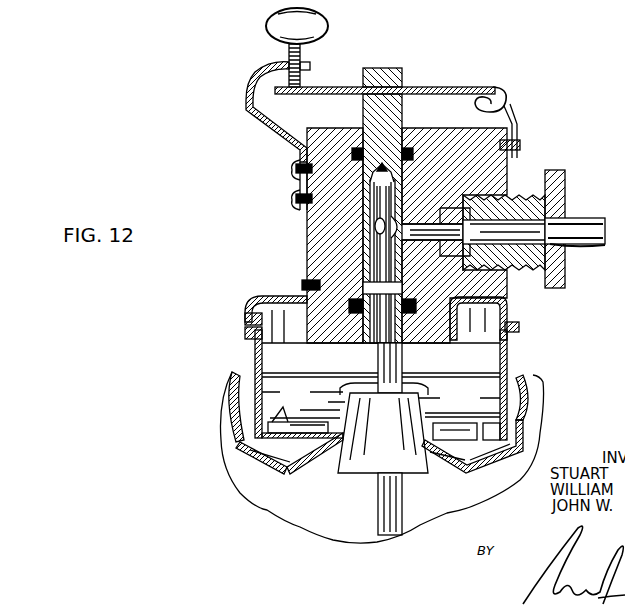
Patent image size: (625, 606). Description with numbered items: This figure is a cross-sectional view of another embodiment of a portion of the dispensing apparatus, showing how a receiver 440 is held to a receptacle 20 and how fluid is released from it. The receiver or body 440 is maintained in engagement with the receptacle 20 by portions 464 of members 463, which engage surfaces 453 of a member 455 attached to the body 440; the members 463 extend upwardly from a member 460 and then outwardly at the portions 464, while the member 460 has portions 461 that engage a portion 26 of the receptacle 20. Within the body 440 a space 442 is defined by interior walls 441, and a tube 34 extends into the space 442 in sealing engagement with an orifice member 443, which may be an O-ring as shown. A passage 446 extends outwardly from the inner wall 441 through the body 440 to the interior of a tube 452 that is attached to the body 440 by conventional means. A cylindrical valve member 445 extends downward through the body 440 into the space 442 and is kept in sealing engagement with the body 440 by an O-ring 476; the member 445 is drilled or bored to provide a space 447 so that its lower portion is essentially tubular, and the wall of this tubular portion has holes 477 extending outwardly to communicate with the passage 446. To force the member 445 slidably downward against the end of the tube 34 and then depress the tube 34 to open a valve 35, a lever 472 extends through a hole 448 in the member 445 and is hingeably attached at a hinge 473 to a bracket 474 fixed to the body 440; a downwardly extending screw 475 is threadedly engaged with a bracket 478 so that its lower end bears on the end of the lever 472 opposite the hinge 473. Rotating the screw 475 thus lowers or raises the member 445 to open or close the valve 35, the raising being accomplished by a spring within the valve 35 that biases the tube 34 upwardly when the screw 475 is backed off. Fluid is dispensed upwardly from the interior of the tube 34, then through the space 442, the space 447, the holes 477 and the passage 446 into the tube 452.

The receptacle 20 is at (201, 466).
The portion of receptacle 26 is at (455, 417).
The tube 34 is at (402, 366).
The valve 35 is at (398, 480).
The receiver 440 is at (327, 129).
The interior walls 441 is at (360, 283).
The space 442 is at (360, 292).
The orifice member 443 is at (318, 344).
The valve member 445 is at (378, 68).
The passage 446 is at (421, 224).
The space 447 is at (370, 225).
The hole 448 is at (400, 87).
The tube 452 is at (562, 226).
The surfaces 453 is at (247, 333).
The member 455 is at (280, 303).
The member 460 is at (280, 455).
The portions 461 is at (330, 401).
The members 463 is at (255, 358).
The portions 464 is at (247, 319).
The lever 472 is at (358, 87).
The hinge 473 is at (506, 99).
The bracket 474 is at (517, 126).
The screw 475 is at (288, 60).
The O-ring 476 is at (407, 147).
The holes 477 is at (362, 229).
The bracket 478 is at (246, 90).